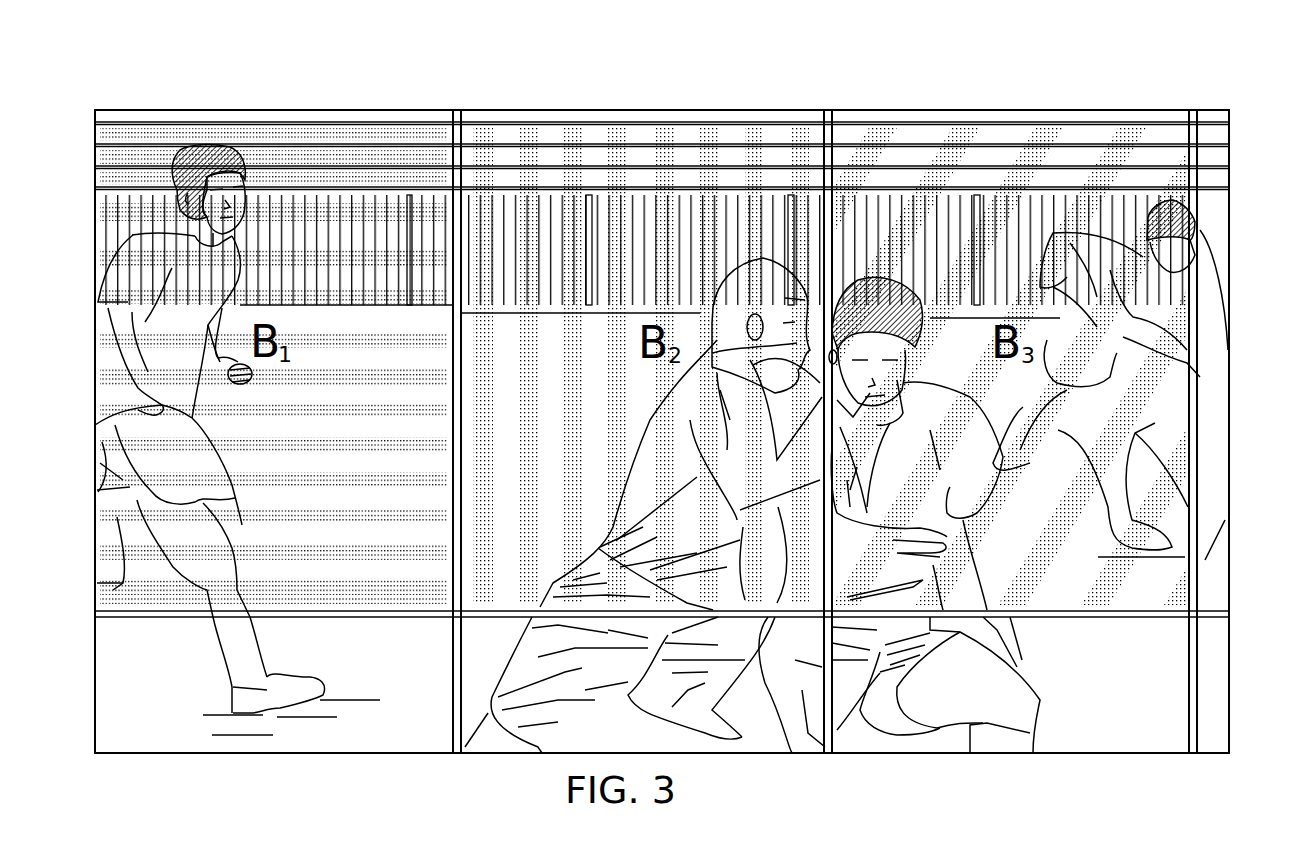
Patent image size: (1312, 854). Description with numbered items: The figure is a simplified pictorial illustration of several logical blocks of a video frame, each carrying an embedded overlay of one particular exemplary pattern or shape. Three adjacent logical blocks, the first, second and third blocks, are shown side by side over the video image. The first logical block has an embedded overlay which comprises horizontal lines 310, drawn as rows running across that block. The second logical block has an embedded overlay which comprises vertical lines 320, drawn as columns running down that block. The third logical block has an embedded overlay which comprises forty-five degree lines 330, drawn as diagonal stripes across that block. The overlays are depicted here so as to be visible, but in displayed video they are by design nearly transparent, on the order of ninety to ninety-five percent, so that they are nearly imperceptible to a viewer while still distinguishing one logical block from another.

The horizontal lines 310 is at (112, 140).
The vertical lines 320 is at (487, 135).
The 45 degrees lines 330 is at (1145, 137).